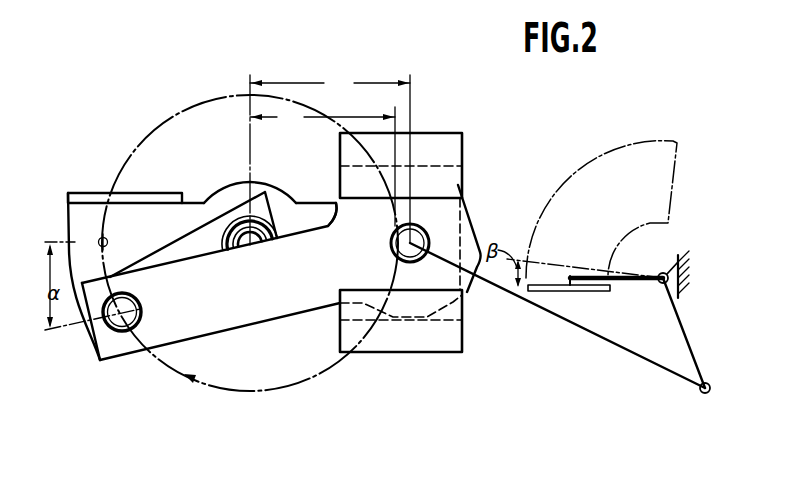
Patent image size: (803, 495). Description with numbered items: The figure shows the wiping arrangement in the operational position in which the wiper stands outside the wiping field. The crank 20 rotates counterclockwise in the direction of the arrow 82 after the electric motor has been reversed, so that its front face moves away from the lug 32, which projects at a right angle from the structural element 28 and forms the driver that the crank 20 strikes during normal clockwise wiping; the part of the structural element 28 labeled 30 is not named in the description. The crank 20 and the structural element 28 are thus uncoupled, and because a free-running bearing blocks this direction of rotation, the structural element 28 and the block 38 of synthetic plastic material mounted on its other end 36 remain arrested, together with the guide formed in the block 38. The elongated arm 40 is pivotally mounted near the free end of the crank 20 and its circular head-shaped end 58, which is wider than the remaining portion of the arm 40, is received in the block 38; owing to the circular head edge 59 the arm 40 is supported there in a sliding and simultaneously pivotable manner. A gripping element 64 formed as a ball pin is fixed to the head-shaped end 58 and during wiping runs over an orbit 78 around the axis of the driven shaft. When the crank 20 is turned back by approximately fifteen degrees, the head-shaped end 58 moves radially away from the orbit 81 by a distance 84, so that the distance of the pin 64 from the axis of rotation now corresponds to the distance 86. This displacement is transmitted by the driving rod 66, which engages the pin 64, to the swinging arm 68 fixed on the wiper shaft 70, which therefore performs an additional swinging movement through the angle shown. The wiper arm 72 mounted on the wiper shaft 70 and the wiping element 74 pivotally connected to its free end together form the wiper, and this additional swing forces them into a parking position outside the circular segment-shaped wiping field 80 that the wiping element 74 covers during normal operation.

The crank 20 is at (205, 240).
The structural element 28 is at (235, 186).
The lever body 30 is at (75, 225).
The lug 32 is at (90, 195).
The other end of the structural element 36 is at (333, 215).
The block 38 is at (452, 135).
The arm 40 is at (284, 317).
The end of the arm 58 is at (466, 290).
The head edge 59 is at (458, 174).
The gripping element 64 is at (410, 243).
The driving rod 66 is at (640, 357).
The swinging arm 68 is at (692, 355).
The wiper shaft 70 is at (663, 273).
The wiper arm 72 is at (641, 282).
The wiping element 74 is at (600, 292).
The orbit 78 is at (199, 102).
The wiping field 80 is at (613, 162).
The orbit 81 is at (322, 166).
The arrow 82 is at (190, 380).
The distance 84 is at (403, 113).
The distance 86 is at (330, 159).